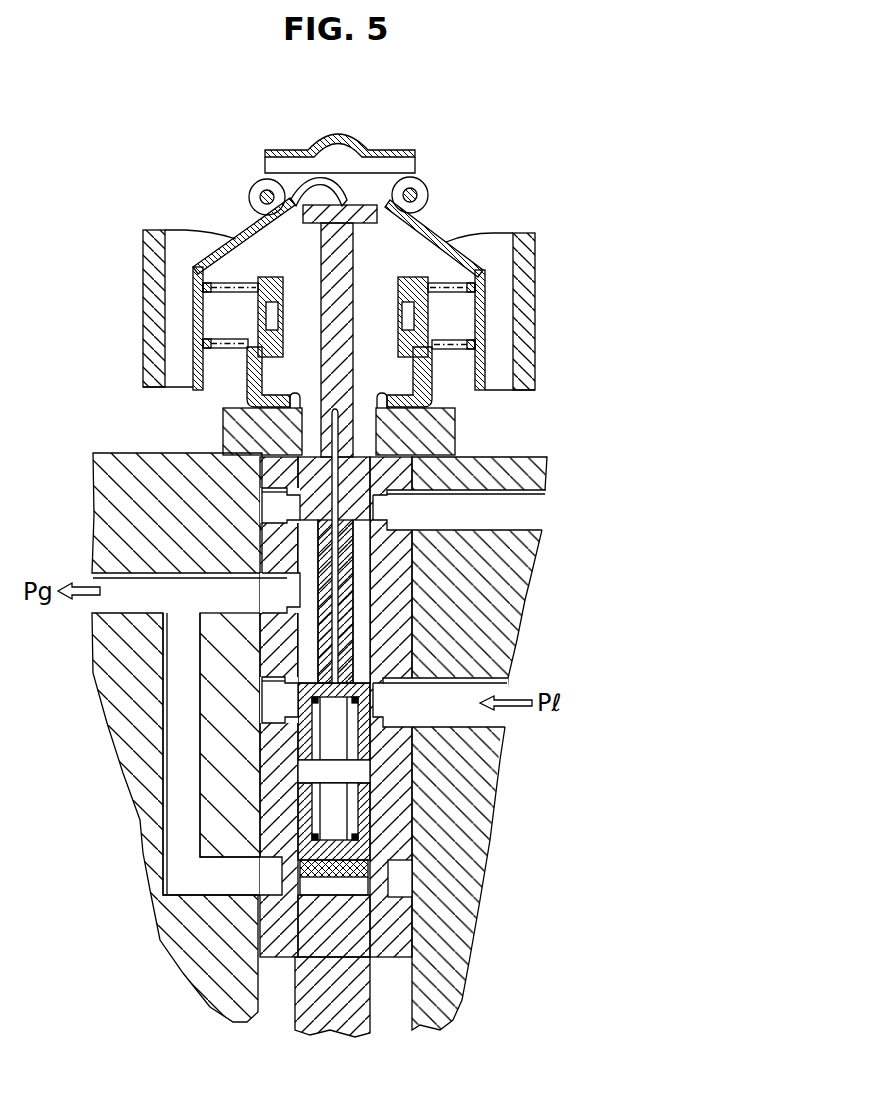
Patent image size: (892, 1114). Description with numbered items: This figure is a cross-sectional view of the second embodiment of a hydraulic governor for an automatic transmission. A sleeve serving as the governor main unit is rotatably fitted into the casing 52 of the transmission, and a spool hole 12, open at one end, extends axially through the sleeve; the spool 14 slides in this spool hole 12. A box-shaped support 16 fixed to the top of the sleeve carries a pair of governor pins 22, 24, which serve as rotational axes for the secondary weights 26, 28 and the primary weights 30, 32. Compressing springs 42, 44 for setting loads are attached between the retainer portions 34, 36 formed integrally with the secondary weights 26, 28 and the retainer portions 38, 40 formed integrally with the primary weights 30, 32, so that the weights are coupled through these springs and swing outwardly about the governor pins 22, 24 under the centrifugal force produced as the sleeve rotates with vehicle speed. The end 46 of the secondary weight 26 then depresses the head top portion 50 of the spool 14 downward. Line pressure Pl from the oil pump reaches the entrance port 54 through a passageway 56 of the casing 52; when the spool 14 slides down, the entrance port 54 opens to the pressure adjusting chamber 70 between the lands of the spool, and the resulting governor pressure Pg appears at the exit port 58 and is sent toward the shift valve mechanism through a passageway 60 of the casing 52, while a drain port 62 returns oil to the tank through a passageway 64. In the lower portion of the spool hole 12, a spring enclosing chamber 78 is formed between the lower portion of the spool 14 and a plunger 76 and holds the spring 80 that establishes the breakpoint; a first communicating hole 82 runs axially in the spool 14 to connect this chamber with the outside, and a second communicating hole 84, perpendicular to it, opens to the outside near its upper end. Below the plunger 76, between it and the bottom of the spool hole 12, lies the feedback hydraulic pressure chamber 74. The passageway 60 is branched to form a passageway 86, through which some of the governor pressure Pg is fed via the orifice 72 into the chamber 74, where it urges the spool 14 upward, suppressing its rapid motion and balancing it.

The spool hole 12 is at (392, 622).
The spool 14 is at (462, 752).
The support 16 is at (263, 376).
The governor pin 22 is at (256, 186).
The governor pin 24 is at (421, 185).
The secondary weight 26 is at (236, 236).
The secondary weight 28 is at (445, 240).
The primary weight 30 is at (178, 338).
The primary weight 32 is at (536, 338).
The retainer portion 34 is at (204, 288).
The retainer portion 36 is at (480, 300).
The retainer portion 38 is at (247, 338).
The retainer portion 40 is at (437, 328).
The compressing spring 42 is at (207, 344).
The compressing spring 44 is at (482, 377).
The end of secondary weight 46 is at (310, 183).
The head top portion 50 is at (311, 213).
The casing 52 is at (172, 942).
The entrance port 54 is at (406, 708).
The passageway 56 is at (512, 690).
The exit port 58 is at (275, 597).
The passageway 60 is at (90, 573).
The drain port 62 is at (405, 514).
The passageway 64 is at (545, 500).
The pressure adjusting chamber 70 is at (368, 665).
The orifice 72 is at (285, 905).
The feedback hydraulic pressure chamber 74 is at (372, 900).
The plunger 76 is at (368, 860).
The spring enclosing chamber 78 is at (368, 772).
The spring 80 is at (368, 808).
The first communicating hole 82 is at (337, 447).
The second communicating hole 84 is at (352, 447).
The passageway 86 is at (182, 718).